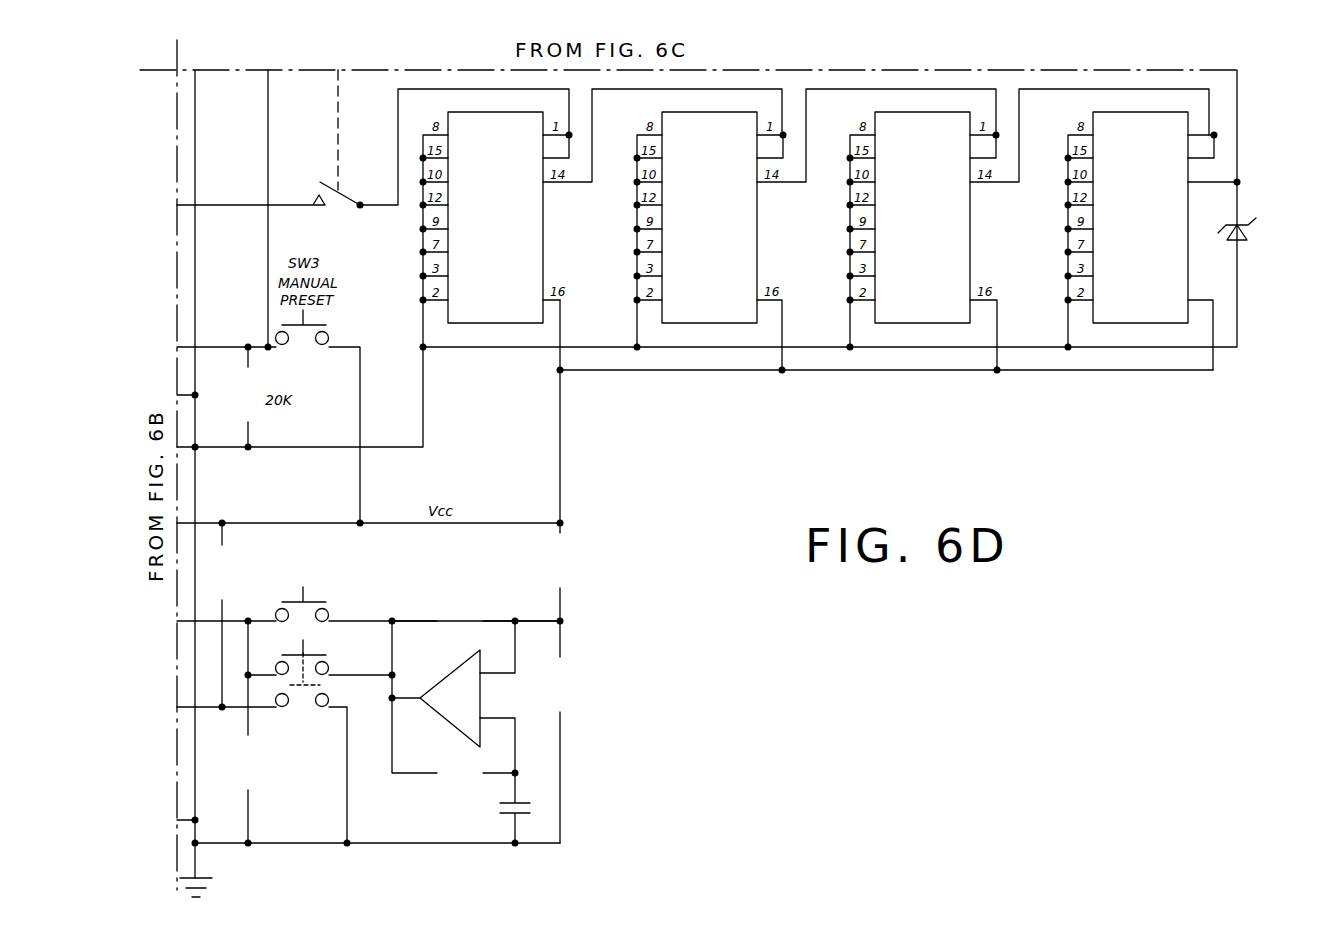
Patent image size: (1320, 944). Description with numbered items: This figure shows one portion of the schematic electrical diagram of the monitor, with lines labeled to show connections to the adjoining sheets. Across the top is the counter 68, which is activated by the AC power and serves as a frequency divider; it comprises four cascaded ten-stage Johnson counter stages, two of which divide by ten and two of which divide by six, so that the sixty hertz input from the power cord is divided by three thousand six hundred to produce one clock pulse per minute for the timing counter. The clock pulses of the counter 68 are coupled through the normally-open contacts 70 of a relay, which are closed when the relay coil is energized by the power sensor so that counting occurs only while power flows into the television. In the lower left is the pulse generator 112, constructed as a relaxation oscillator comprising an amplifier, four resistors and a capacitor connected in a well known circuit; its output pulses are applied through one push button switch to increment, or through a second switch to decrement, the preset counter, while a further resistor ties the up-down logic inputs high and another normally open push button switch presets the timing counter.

The normally-open contacts 70 is at (340, 212).
The counter 68 is at (868, 222).
The pulse generator 112 is at (451, 594).